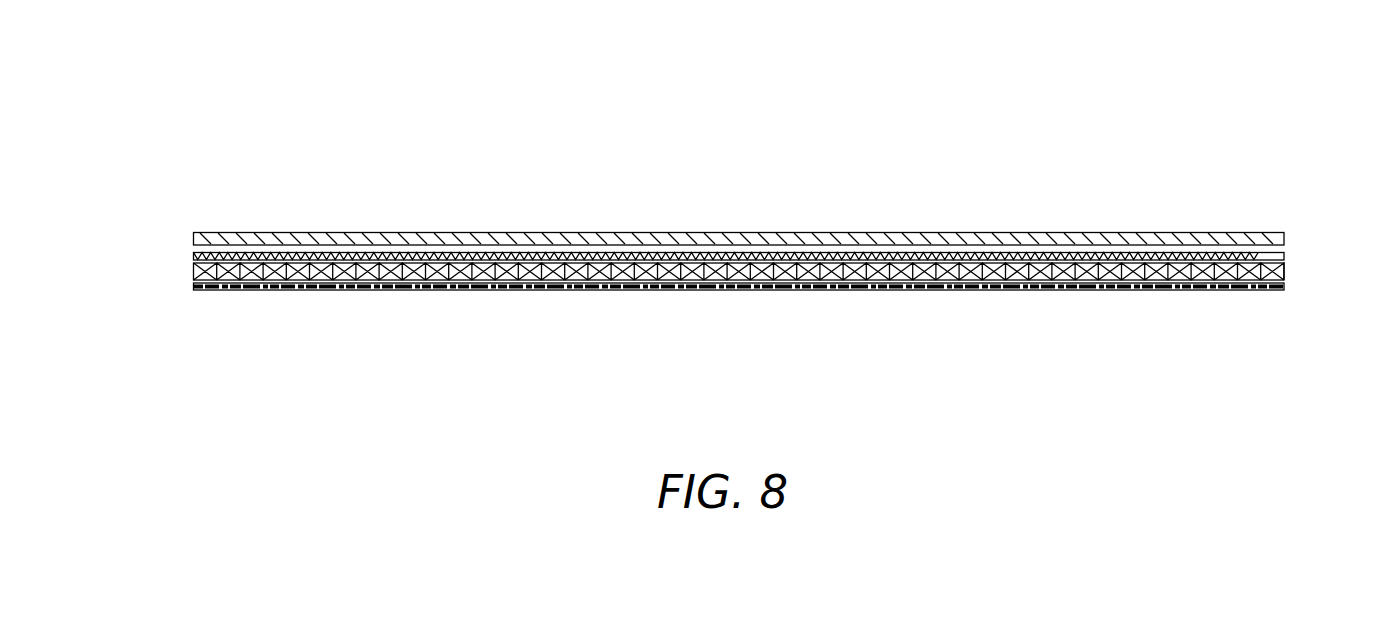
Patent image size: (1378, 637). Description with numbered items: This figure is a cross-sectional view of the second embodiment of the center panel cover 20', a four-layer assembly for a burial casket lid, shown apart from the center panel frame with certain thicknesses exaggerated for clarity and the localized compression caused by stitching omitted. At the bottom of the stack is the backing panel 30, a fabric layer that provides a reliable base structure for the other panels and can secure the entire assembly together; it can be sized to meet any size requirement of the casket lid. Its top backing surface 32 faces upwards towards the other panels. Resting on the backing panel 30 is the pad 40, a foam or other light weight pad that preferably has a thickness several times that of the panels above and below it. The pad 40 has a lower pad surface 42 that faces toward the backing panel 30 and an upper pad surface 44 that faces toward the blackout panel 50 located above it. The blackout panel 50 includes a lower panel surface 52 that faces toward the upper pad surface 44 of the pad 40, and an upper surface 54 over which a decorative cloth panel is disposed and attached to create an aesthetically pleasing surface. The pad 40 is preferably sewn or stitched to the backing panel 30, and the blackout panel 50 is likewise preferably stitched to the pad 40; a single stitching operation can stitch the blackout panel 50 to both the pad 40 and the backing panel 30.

The center panel cover 20' is at (722, 192).
The backing panel 30 is at (1304, 290).
The top backing surface 32 is at (1288, 280).
The pad 40 is at (155, 273).
The lower pad surface 42 is at (192, 281).
The upper pad surface 44 is at (253, 268).
The blackout panel 50 is at (1305, 247).
The lower panel surface 52 is at (192, 256).
The upper surface 54 is at (803, 258).